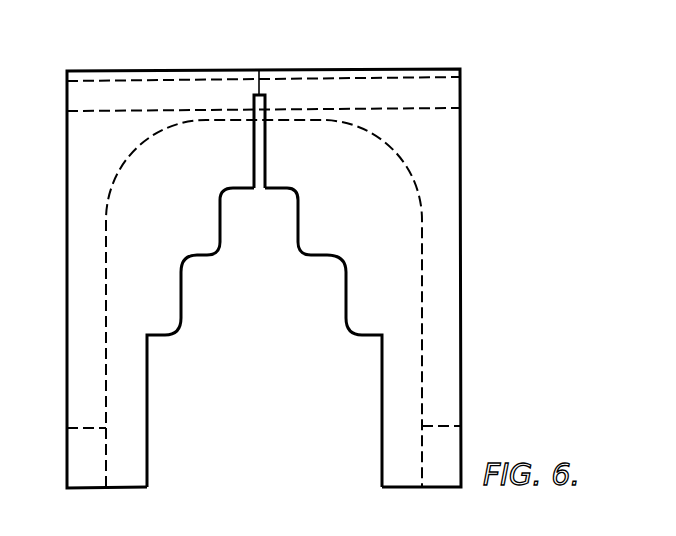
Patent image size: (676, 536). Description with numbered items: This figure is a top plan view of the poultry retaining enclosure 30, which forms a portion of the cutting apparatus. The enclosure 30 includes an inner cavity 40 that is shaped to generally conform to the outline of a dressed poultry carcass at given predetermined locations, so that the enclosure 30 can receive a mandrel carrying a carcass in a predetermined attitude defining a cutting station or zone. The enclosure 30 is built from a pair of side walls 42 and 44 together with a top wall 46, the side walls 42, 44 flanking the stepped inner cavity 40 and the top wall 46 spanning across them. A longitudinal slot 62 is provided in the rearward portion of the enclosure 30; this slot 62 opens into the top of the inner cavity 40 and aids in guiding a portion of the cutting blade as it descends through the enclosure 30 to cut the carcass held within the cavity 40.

The poultry retaining enclosure 30 is at (280, 281).
The inner cavity 40 is at (345, 310).
The side wall 42 is at (460, 200).
The side wall 44 is at (68, 455).
The top wall 46 is at (432, 141).
The longitudinal slot 62 is at (262, 138).